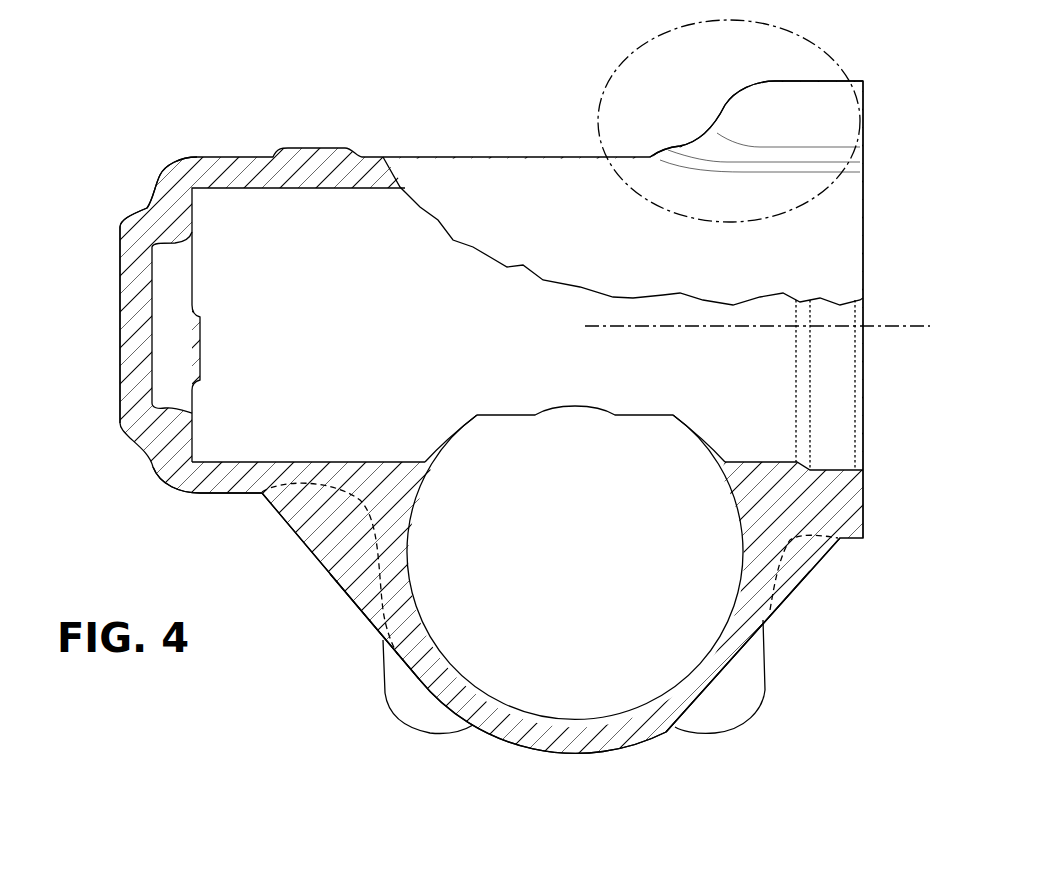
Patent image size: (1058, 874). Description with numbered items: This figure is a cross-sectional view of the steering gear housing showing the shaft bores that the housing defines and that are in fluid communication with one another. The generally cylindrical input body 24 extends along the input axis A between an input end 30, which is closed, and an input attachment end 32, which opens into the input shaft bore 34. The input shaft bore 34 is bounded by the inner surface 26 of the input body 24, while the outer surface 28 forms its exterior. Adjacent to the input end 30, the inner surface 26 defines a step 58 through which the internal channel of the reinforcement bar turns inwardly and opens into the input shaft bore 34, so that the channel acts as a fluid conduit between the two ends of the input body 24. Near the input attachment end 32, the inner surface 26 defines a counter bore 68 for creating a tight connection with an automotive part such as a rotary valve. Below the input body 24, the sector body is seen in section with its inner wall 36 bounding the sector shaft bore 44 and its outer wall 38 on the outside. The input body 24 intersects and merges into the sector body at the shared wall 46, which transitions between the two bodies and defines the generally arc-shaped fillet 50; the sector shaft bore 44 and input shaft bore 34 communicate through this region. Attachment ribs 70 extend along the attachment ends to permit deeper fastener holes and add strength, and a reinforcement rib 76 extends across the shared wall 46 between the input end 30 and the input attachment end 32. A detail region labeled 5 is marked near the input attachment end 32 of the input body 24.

The detail view circle 5 is at (632, 50).
The input body 24 is at (163, 161).
The inner surface 26 is at (255, 462).
The outer surface 28 is at (212, 497).
The input end 30 is at (118, 258).
The input attachment end 32 is at (865, 100).
The input shaft bore 34 is at (497, 342).
The inner wall 36 is at (728, 493).
The outer wall 38 is at (515, 745).
The sector shaft bore 44 is at (569, 587).
The shared wall 46 is at (375, 497).
The fillet 50 is at (358, 515).
The step 58 is at (162, 408).
The counter bore 68 is at (840, 468).
The attachment ribs 70 is at (805, 97).
The reinforcement rib 76 is at (357, 583).
The input axis A is at (890, 326).